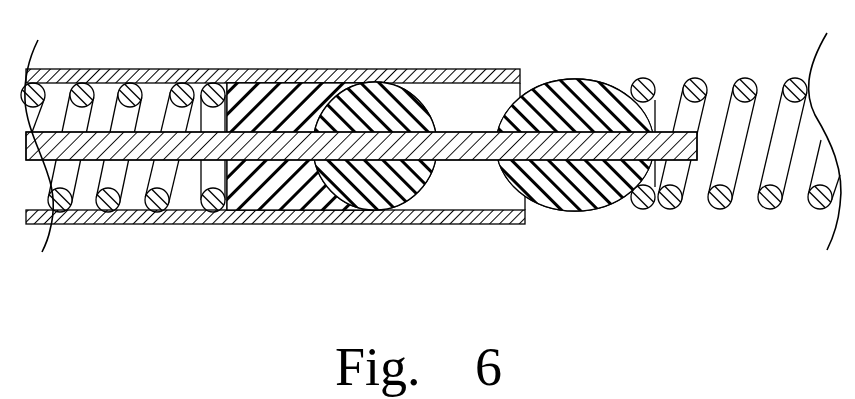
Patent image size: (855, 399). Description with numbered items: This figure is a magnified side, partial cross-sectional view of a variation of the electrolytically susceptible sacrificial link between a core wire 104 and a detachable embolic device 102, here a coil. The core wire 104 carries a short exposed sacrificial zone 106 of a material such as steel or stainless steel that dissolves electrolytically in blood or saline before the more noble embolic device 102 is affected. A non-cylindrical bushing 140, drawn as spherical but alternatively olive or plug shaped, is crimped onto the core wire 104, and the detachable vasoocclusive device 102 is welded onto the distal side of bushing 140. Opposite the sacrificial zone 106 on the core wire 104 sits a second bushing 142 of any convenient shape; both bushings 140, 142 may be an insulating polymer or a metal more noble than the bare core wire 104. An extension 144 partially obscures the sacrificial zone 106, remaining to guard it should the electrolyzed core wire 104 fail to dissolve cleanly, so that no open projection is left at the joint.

The detachable embolic device 102 is at (697, 78).
The core wire 104 is at (186, 162).
The sacrificial zone 106 is at (495, 124).
The bushing 140 is at (575, 78).
The bushing 142 is at (378, 68).
The extension 144 is at (523, 237).